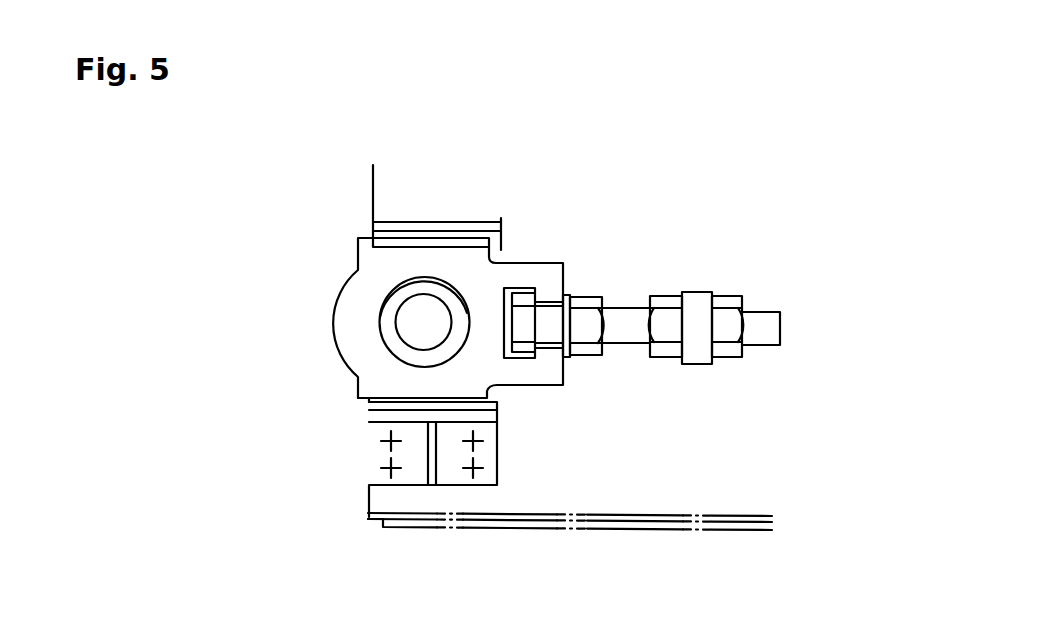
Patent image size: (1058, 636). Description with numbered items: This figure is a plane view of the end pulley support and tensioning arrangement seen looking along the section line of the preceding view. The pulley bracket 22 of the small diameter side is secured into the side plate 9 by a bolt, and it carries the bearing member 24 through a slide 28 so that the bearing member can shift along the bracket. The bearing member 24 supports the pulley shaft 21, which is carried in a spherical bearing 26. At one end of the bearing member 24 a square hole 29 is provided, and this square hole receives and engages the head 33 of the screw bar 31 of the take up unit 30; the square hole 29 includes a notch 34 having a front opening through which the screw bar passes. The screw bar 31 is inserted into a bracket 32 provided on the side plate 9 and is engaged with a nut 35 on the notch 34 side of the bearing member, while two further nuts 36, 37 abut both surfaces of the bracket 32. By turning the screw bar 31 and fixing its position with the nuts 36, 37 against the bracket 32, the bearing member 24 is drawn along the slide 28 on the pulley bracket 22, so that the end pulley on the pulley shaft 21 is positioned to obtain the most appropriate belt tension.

The side plate 9 is at (705, 500).
The pulley shaft 21 is at (413, 332).
The pulley bracket of a small diameter side 22 is at (425, 227).
The bearing member 24 is at (357, 263).
The spherical bearing 26 is at (389, 317).
The slide 28 is at (370, 402).
The square hole 29 is at (523, 288).
The take up unit 30 is at (680, 254).
The screw bar 31 is at (770, 333).
The bracket 32 is at (698, 302).
The head 33 is at (525, 350).
The notch 34 is at (550, 347).
The nut 35 is at (590, 300).
The nut 36 is at (660, 353).
The nut 37 is at (727, 353).